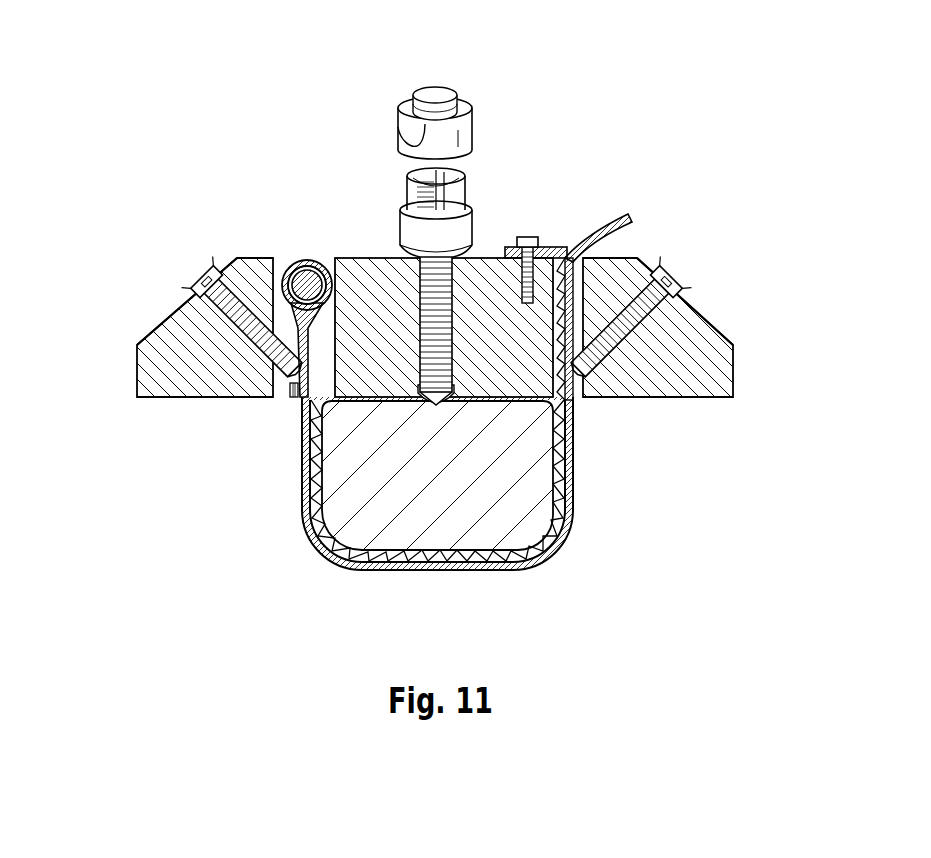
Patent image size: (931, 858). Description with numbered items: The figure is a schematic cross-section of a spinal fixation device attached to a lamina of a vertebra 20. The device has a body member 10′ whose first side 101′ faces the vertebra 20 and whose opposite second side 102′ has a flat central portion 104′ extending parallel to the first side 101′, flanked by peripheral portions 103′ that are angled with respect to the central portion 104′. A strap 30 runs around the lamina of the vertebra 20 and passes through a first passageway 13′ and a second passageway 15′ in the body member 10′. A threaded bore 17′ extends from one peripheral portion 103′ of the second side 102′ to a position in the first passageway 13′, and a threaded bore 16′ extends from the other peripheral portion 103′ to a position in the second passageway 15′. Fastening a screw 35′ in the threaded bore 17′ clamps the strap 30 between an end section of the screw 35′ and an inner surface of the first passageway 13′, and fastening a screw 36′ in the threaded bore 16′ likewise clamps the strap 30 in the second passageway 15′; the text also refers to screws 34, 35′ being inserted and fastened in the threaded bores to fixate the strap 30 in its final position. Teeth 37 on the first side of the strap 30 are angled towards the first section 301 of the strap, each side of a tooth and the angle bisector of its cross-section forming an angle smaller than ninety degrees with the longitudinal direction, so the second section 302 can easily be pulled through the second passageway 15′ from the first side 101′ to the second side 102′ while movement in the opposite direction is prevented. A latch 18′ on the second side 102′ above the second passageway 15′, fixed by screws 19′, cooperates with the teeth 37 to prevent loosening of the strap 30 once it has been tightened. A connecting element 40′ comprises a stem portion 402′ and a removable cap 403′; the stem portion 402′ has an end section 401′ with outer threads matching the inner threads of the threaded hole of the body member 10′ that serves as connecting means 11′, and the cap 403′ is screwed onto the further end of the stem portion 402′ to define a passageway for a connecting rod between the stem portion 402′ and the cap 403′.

The body member 10′ is at (718, 368).
The first side of the body member 101′ is at (665, 400).
The second side of the body member 102′ is at (248, 255).
The peripheral portions 103′ is at (708, 312).
The flat central portion 104′ is at (347, 262).
The connecting means 11′ is at (408, 286).
The first passageway 13′ is at (294, 398).
The second passageway 15′ is at (580, 400).
The threaded bore 16′ is at (655, 318).
The threaded bore 17′ is at (244, 338).
The latch 18′ is at (548, 247).
The screws 19′ is at (530, 237).
The vertebra 20 is at (528, 512).
The strap 30 is at (550, 556).
The first section of the strap 301 is at (291, 268).
The second section of the strap 302 is at (615, 215).
The screw 34 is at (311, 262).
The screw 35′ is at (197, 287).
The screw 36′ is at (668, 270).
The teeth 37 is at (346, 546).
The connecting element 40′ is at (468, 238).
The end section of the stem portion 401′ is at (412, 380).
The stem portion 402′ is at (468, 195).
The removable cap 403′ is at (400, 143).